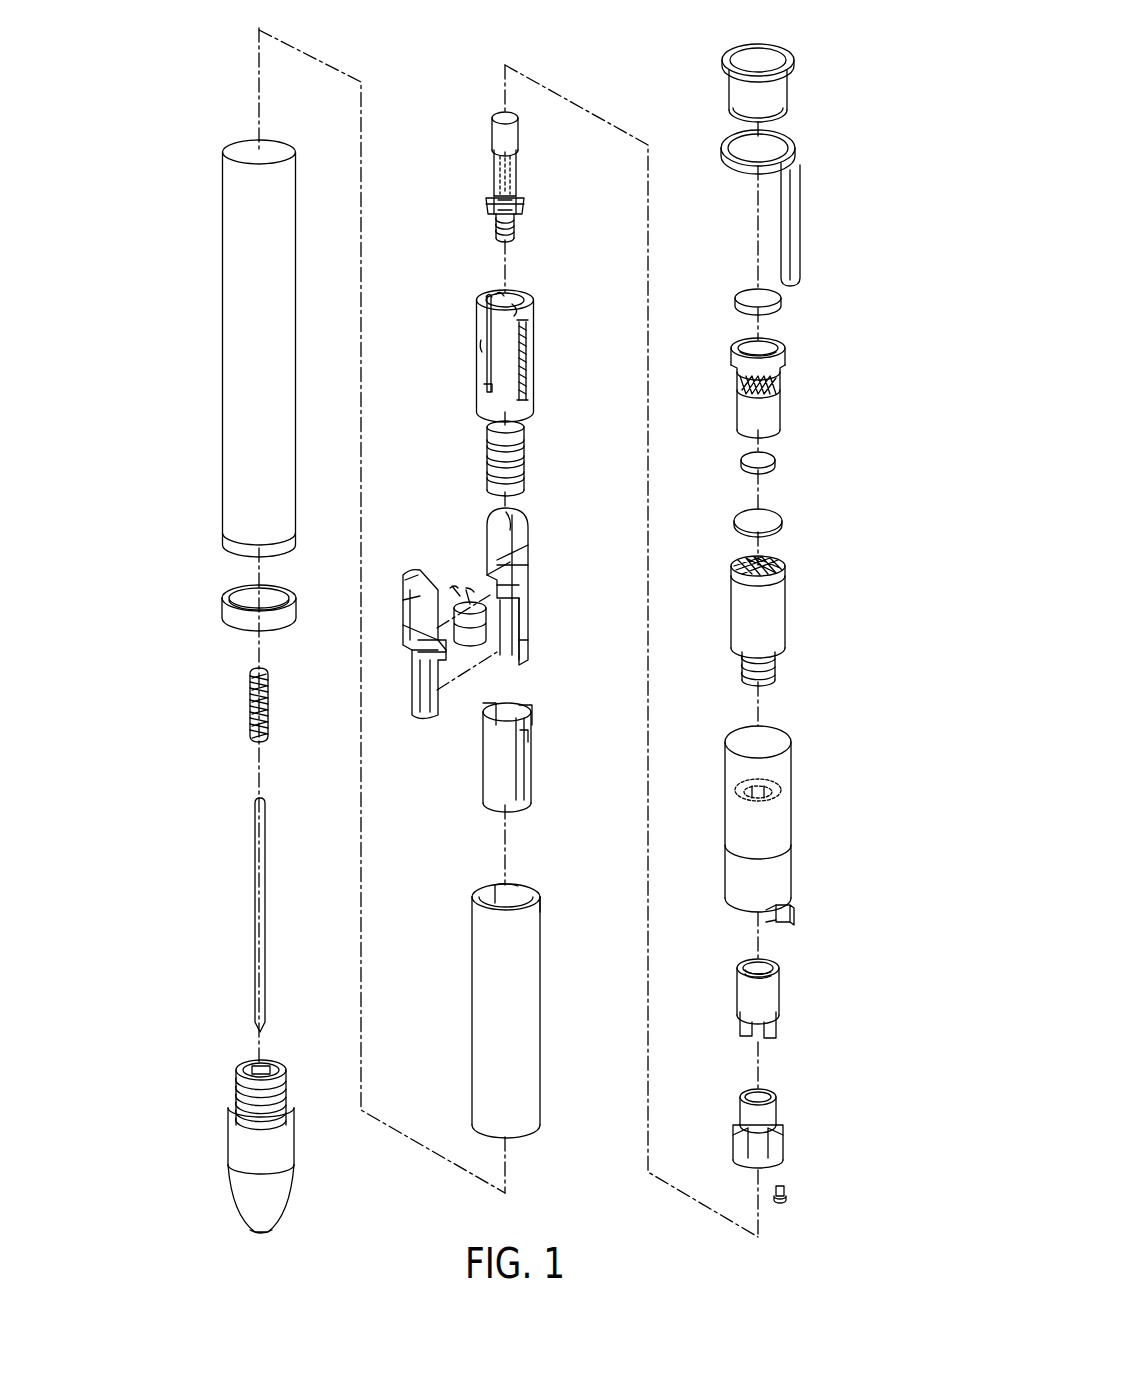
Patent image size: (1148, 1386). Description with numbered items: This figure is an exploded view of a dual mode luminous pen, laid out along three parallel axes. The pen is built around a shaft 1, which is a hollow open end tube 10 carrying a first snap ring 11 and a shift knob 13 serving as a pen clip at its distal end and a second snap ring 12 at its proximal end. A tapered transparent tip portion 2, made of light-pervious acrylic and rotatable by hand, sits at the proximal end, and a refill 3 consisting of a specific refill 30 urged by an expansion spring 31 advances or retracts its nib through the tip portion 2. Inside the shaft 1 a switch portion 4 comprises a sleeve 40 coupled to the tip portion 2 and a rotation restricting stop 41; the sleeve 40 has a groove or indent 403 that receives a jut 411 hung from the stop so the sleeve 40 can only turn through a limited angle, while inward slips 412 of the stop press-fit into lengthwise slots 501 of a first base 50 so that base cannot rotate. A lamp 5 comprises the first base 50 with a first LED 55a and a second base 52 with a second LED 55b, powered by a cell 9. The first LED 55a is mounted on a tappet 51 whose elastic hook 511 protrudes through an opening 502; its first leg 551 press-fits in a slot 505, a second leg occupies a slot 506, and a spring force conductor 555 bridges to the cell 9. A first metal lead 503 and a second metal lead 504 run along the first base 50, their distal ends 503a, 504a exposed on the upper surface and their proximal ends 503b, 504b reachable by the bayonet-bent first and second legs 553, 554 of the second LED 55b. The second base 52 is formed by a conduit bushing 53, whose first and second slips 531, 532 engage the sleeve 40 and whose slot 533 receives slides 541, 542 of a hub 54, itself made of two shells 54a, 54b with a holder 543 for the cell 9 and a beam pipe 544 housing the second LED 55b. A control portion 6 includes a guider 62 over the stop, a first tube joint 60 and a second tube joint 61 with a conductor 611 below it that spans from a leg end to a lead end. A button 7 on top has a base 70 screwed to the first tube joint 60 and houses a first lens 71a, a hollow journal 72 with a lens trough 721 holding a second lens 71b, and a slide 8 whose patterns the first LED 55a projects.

The shaft 1 is at (191, 283).
The open end tube 10 is at (243, 300).
The second snap ring 12 is at (236, 592).
The tapered transparent tip portion 2 is at (236, 1146).
The refill 3 is at (195, 667).
The specific refill 30 is at (256, 826).
The expansion spring 31 is at (252, 672).
The switch portion 4 is at (710, 903).
The sleeve 40 is at (576, 1004).
The groove or indent 403 is at (514, 896).
The rotation restricting stop 41 is at (770, 844).
The jut 411 is at (792, 914).
The slips 412 is at (775, 928).
The lamp 5 is at (587, 118).
The first base 50 is at (478, 343).
The lengthwise slots 501 is at (522, 298).
The opening 502 is at (483, 346).
The first metal lead 503 is at (527, 356).
The distal end of first lead 503a is at (527, 326).
The proximal end of first lead 503b is at (529, 400).
The second metal lead 504 is at (487, 320).
The distal end of second lead 504a is at (490, 298).
The proximal end of second lead 504b is at (482, 390).
The slot 505 is at (521, 312).
The slot 506 is at (500, 296).
The tappet 51 is at (496, 168).
The elastic hook 511 is at (488, 206).
The first light emitting diode 55a is at (512, 140).
The first leg of first LED 551 is at (516, 202).
The spring force conductor 555 is at (514, 230).
The second base 52 is at (431, 805).
The conduit bushing 53 is at (505, 778).
The first slip 531 is at (526, 742).
The second slip 532 is at (522, 705).
The slot 533 is at (530, 720).
The hub 54 is at (473, 648).
The shell 54a is at (401, 621).
The shell 54b is at (509, 618).
The slide 541 is at (525, 586).
The slide 542 is at (525, 562).
The holder 543 is at (412, 588).
The beam pipe 544 is at (415, 684).
The second light emitting diode 55b is at (465, 608).
The first leg of second LED 553 is at (470, 602).
The second leg of second LED 554 is at (455, 592).
The cell 9 is at (487, 433).
The first snap ring 11 is at (778, 96).
The shift knob 13 is at (788, 224).
The control portion 6 is at (847, 990).
The first tube joint 60 is at (770, 998).
The second tube joint 61 is at (770, 1116).
The conductor 611 is at (786, 1194).
The guider 62 is at (785, 826).
The button 7 is at (852, 312).
The base 70 is at (780, 626).
The first lens 71a is at (768, 526).
The second lens 71b is at (778, 306).
The hollow journal 72 is at (783, 385).
The lens trough 721 is at (770, 346).
The slide 8 is at (750, 460).